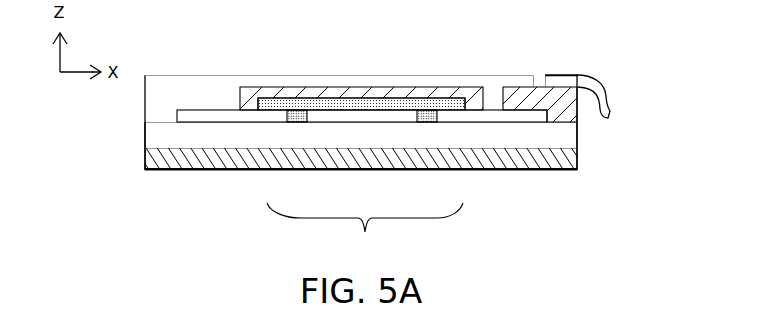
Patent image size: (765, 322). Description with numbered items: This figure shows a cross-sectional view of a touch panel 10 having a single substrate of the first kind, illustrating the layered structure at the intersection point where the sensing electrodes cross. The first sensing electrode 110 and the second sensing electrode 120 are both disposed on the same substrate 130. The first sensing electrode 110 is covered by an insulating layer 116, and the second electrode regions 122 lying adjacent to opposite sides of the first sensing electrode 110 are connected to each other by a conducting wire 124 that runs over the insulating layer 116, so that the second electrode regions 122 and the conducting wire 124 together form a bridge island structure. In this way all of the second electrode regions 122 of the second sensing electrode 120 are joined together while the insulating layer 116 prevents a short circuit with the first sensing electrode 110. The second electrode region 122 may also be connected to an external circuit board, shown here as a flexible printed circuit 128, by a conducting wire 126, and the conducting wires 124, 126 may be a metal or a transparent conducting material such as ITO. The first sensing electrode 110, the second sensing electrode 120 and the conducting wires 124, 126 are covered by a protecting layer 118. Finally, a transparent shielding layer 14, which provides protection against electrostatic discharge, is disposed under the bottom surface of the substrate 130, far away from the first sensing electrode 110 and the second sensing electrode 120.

The touch panel 10 is at (671, 26).
The transparent shielding layer 14 is at (573, 160).
The first sensing electrode 110 is at (383, 118).
The insulating layer 116 is at (297, 105).
The protecting layer 118 is at (213, 81).
The second sensing electrode 120 is at (365, 231).
The second electrode region 122 is at (280, 123).
The conducting wire 124 is at (472, 95).
The conducting wire 126 is at (523, 92).
The flexible printed circuit 128 is at (611, 111).
The substrate 130 is at (573, 138).